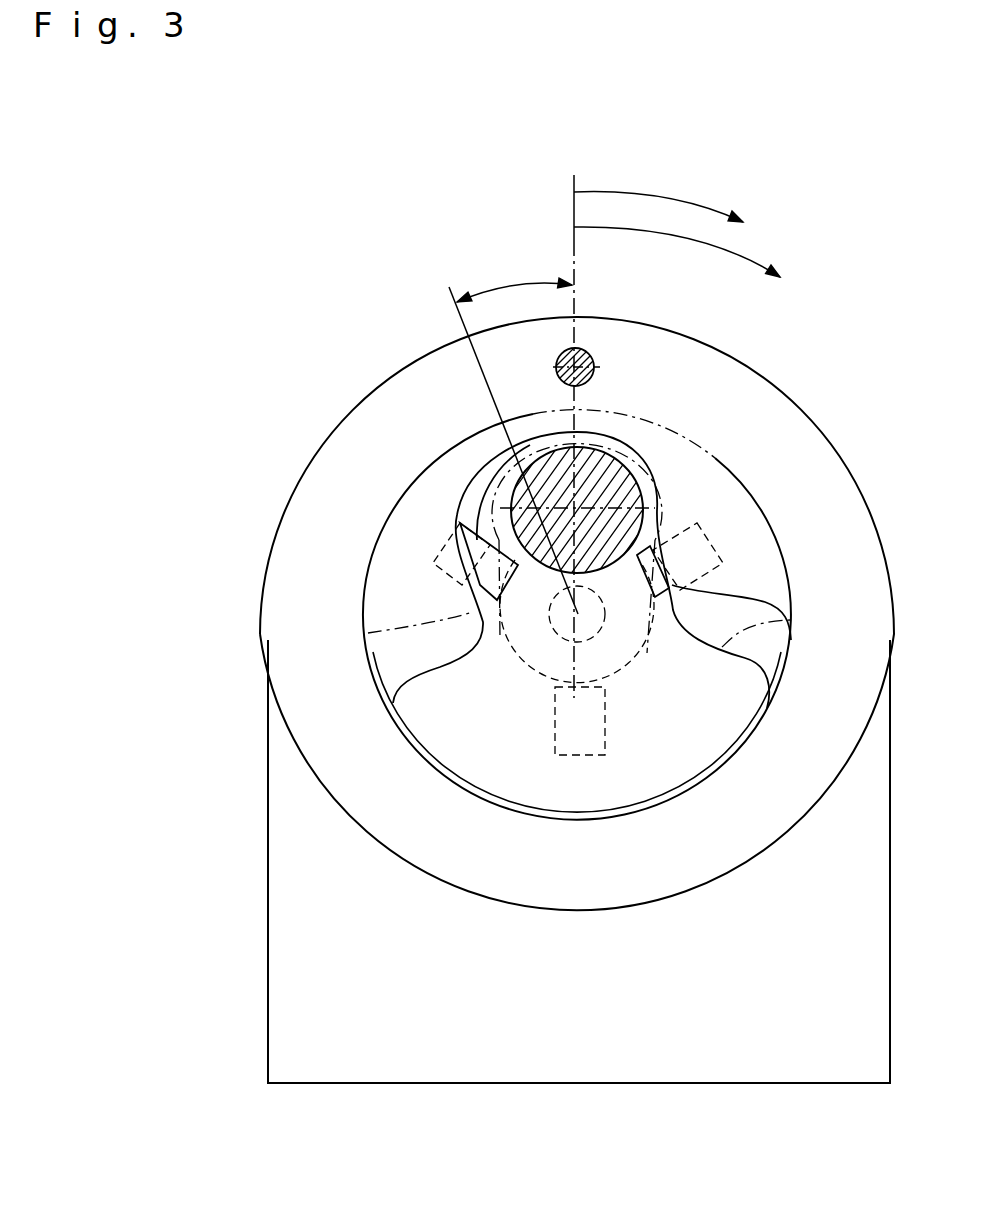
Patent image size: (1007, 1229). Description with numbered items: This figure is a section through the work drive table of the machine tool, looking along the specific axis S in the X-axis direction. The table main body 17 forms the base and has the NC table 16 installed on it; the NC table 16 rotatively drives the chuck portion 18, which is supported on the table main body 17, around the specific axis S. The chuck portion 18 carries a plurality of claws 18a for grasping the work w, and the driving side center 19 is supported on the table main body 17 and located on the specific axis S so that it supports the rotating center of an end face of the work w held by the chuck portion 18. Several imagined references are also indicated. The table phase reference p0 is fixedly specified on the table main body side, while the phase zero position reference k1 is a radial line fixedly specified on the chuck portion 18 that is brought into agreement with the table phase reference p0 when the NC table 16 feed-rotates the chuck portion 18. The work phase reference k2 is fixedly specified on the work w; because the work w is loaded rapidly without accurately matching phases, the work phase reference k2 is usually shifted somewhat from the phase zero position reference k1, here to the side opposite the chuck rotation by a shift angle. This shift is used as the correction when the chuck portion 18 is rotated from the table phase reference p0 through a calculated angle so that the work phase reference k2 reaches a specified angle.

The NC table 16 is at (383, 397).
The table main body 17 is at (303, 958).
The chuck portion 18 is at (416, 485).
The claws 18a is at (697, 523).
The driving side center 19 is at (603, 630).
The work w is at (786, 613).
The table phase reference p0 is at (595, 377).
The phase zero position reference k1 is at (577, 297).
The work phase reference k2 is at (448, 287).